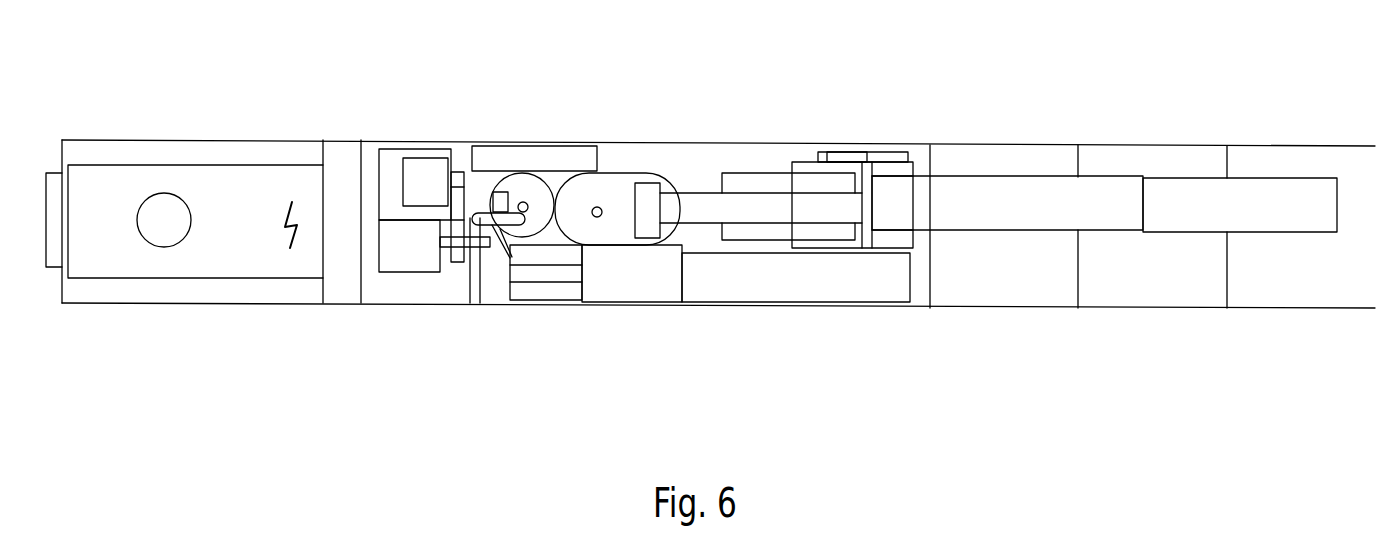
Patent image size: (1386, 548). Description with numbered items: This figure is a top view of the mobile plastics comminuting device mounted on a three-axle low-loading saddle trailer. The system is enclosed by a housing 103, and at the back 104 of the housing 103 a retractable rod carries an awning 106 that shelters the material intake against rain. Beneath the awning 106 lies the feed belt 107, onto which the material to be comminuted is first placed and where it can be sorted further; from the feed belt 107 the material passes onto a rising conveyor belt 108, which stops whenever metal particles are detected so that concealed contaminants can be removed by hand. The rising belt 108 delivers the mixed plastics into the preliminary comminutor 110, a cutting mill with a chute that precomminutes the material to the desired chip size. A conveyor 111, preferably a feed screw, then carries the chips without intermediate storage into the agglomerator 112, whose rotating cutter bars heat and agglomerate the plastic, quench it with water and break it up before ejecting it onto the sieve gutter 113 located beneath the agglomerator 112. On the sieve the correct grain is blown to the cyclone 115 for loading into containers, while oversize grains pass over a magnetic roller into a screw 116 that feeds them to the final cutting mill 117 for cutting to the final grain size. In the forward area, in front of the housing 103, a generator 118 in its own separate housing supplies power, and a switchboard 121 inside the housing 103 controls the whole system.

The housing 103 is at (750, 143).
The back of housing 104 is at (925, 142).
The awning 106 is at (1117, 146).
The feed belt 107 is at (1200, 190).
The conveyor belt 108 is at (1022, 187).
The preliminary comminutor 110 is at (872, 162).
The conveyor 111 is at (697, 190).
The agglomerator 112 is at (608, 187).
The sieve gutter 113 is at (638, 282).
The cyclone 115 is at (515, 173).
The screw 116 is at (492, 232).
The final cutting mill 117 is at (408, 262).
The generator 118 is at (245, 185).
The switchboard 121 is at (567, 158).